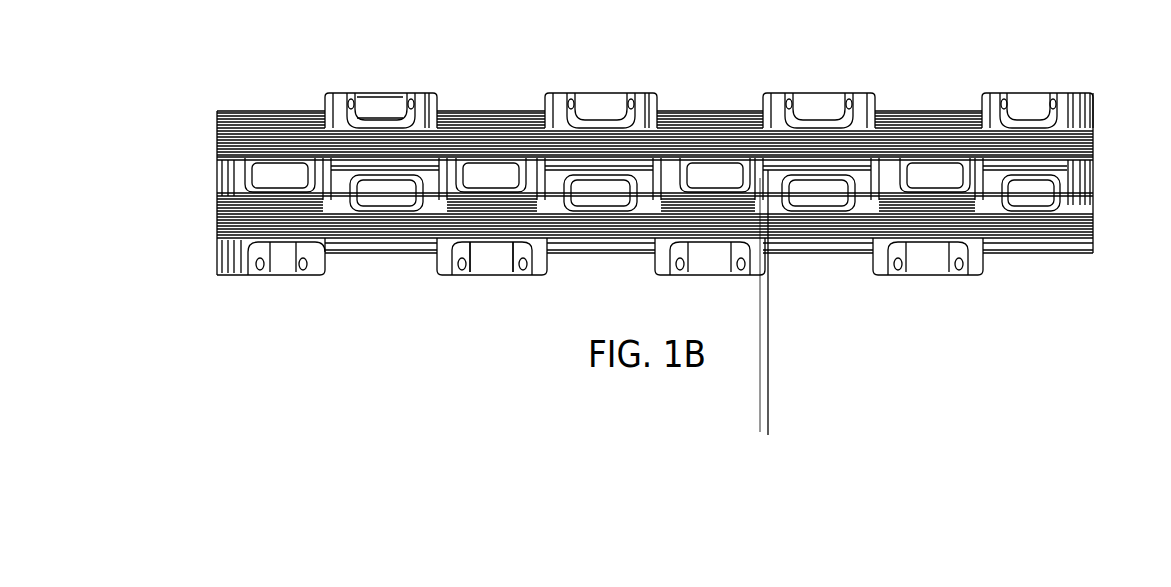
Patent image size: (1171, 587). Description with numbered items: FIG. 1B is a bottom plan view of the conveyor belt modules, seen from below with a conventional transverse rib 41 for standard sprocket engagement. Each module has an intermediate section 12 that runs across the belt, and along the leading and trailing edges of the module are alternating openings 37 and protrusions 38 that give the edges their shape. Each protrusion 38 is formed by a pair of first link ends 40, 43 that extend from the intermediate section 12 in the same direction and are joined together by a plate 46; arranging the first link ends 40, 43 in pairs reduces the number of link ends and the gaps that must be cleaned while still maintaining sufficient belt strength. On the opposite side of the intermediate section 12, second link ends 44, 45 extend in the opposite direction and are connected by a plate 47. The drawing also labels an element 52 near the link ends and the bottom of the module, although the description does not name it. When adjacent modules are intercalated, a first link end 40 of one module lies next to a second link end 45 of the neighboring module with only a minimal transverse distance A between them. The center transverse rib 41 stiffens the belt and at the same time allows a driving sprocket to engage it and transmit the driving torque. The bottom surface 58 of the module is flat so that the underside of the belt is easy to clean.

The intermediate section 12 is at (1057, 230).
The openings 37 is at (729, 92).
The protrusions 38 is at (930, 270).
The first link end 40 is at (340, 97).
The transverse rib 41 is at (475, 145).
The first link end 43 is at (428, 95).
The second link end 44 is at (243, 272).
The second link end 45 is at (305, 178).
The plate 46 is at (381, 105).
The plate 47 is at (494, 257).
The end strut 52 is at (271, 140).
The bottom surface 58 is at (228, 121).
The transverse distance A is at (762, 403).